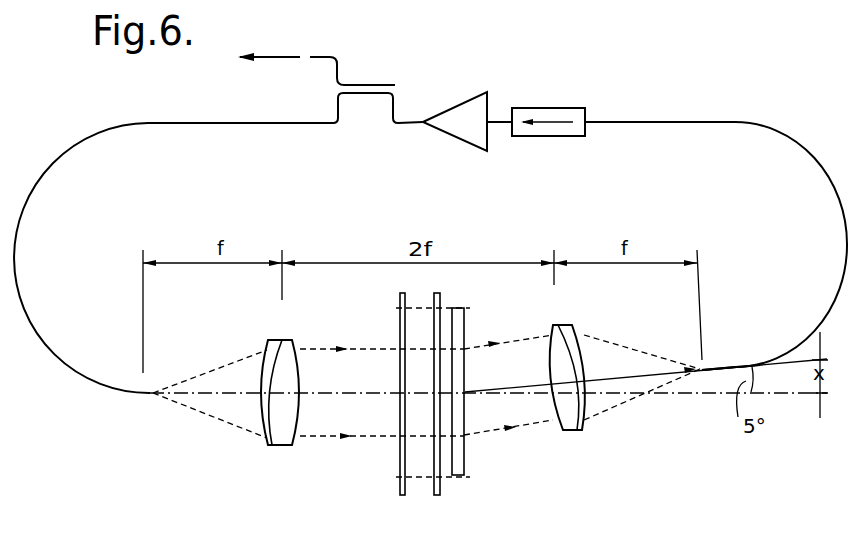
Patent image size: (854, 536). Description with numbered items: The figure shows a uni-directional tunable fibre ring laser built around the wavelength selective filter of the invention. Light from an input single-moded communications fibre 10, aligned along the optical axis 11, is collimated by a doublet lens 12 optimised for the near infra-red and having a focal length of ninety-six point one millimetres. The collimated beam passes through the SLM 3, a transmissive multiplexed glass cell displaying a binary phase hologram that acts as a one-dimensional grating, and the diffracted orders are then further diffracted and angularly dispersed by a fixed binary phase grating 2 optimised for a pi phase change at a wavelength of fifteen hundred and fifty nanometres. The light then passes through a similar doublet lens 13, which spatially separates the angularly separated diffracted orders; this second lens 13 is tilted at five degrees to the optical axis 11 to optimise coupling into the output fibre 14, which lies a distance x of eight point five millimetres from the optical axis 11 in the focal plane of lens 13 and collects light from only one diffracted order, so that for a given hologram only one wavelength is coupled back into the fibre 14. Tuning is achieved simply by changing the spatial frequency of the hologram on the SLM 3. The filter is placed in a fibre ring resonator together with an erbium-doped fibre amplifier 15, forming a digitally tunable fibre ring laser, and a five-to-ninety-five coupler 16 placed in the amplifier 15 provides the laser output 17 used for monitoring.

The fixed binary phase grating 2 is at (465, 322).
The SLM 3 is at (398, 478).
The input single-moded communications fibre 10 is at (70, 370).
The optical axis 11 is at (198, 395).
The doublet lens 12 is at (277, 448).
The second doublet lens 13 is at (578, 433).
The output fibre 14 is at (727, 367).
The erbium-doped fibre amplifier 15 is at (489, 103).
The 5:95 coupler 16 is at (348, 85).
The laser output 17 is at (277, 57).